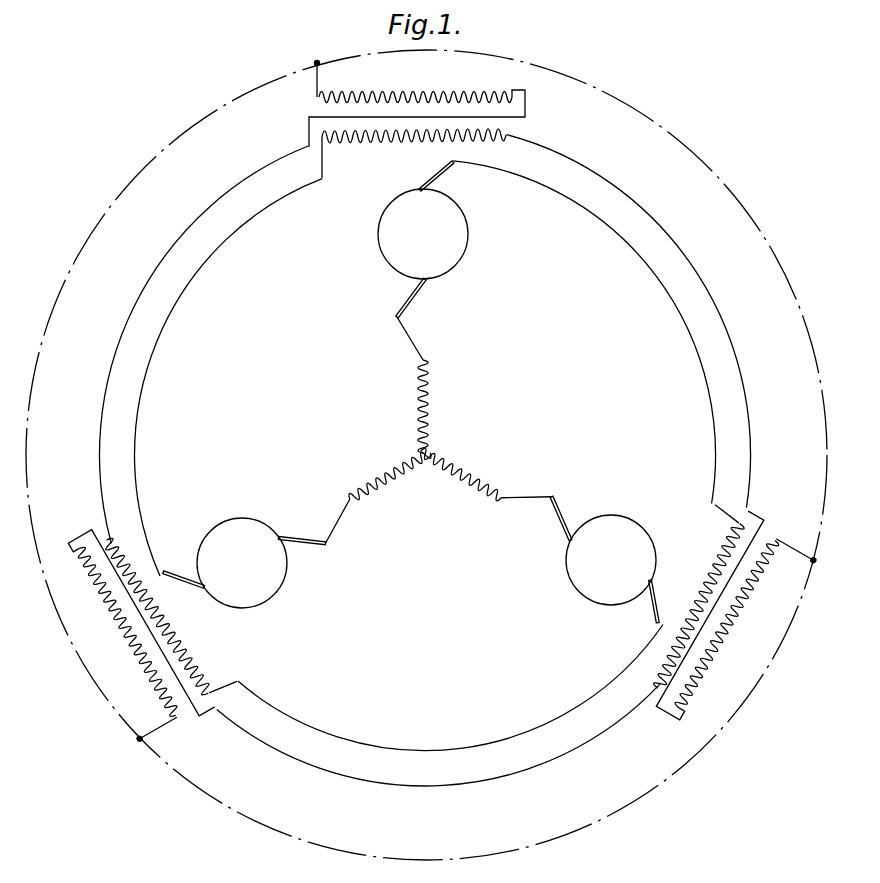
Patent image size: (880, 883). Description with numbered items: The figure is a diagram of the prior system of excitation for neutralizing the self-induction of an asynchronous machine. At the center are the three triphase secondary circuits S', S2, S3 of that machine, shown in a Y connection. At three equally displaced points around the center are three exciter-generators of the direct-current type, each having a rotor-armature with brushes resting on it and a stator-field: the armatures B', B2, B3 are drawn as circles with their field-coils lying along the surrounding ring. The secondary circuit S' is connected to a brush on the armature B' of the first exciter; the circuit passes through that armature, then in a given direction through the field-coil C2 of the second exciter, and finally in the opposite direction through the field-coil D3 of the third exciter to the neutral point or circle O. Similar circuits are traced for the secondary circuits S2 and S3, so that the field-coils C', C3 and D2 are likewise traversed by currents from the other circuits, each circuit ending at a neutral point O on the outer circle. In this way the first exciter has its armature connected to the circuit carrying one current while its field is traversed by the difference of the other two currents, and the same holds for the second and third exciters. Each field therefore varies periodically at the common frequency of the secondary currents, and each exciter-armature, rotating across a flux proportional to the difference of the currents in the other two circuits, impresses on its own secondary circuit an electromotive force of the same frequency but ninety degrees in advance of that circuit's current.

The neutral point O is at (473, 399).
The field-coil of the second exciter D2 is at (548, 391).
The field-coil of the third exciter D3 is at (141, 625).
The field-coil of the first exciter C' is at (414, 160).
The field-coil of the second exciter C2 is at (689, 598).
The field-coil of the third exciter C3 is at (169, 612).
The armature of the first exciter-generator B' is at (438, 234).
The armature of the second exciter-generator B2 is at (586, 560).
The armature of the third exciter-generator B3 is at (254, 563).
The secondary circuit S' is at (426, 365).
The secondary circuit S2 is at (502, 485).
The secondary circuit S3 is at (360, 504).